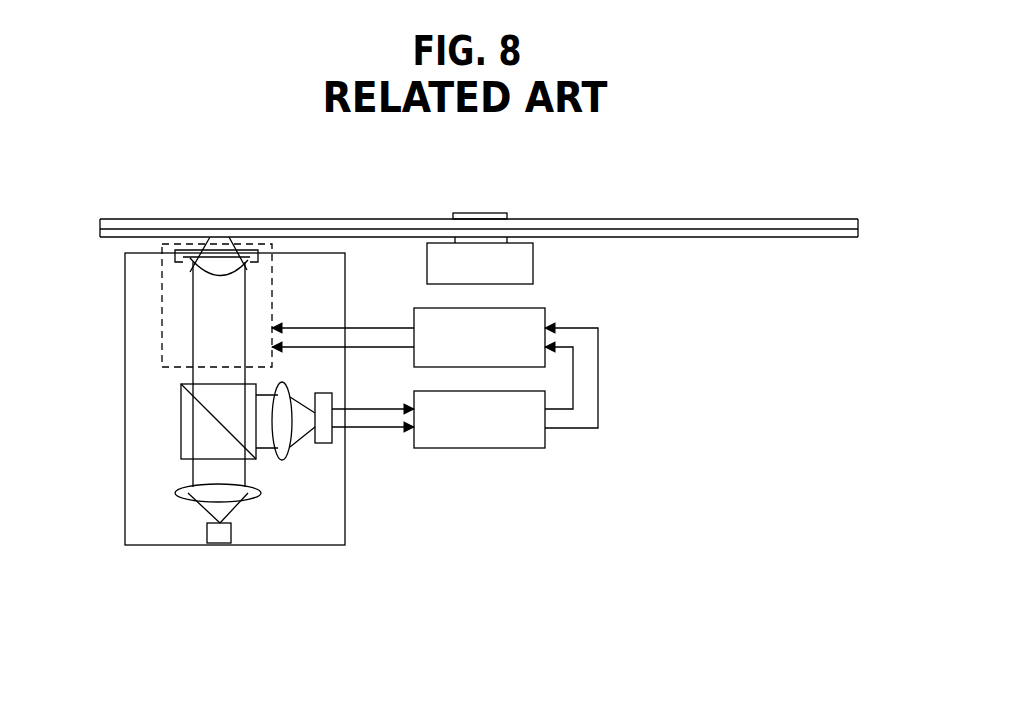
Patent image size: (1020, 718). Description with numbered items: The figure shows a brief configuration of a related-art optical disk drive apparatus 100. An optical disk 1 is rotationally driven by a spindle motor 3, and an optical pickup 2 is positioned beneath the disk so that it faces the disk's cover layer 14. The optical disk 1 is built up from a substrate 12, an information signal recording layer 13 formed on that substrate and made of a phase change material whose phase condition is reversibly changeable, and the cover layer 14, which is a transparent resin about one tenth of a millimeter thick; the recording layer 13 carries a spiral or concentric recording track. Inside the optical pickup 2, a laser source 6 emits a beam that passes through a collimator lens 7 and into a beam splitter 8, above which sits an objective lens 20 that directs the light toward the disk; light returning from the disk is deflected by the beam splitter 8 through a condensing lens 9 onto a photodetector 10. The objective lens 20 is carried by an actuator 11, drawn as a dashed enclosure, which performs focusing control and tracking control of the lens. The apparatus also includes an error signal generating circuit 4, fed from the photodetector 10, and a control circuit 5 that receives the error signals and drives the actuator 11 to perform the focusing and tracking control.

The optical disk 1 is at (772, 203).
The optical pickup 2 is at (142, 545).
The spindle motor 3 is at (524, 263).
The error signal generating circuit 4 is at (478, 437).
The control circuit 5 is at (525, 319).
The laser source 6 is at (222, 535).
The collimator lens 7 is at (188, 494).
The beam splitter 8 is at (181, 443).
The condensing lens 9 is at (282, 460).
The photodetector 10 is at (327, 437).
The actuator 11 is at (162, 322).
The substrate 12 is at (678, 219).
The information signal recording layer 13 is at (712, 230).
The cover layer 14 is at (663, 237).
The objective lens 20 is at (198, 282).
The optical disk drive apparatus 100 is at (612, 505).